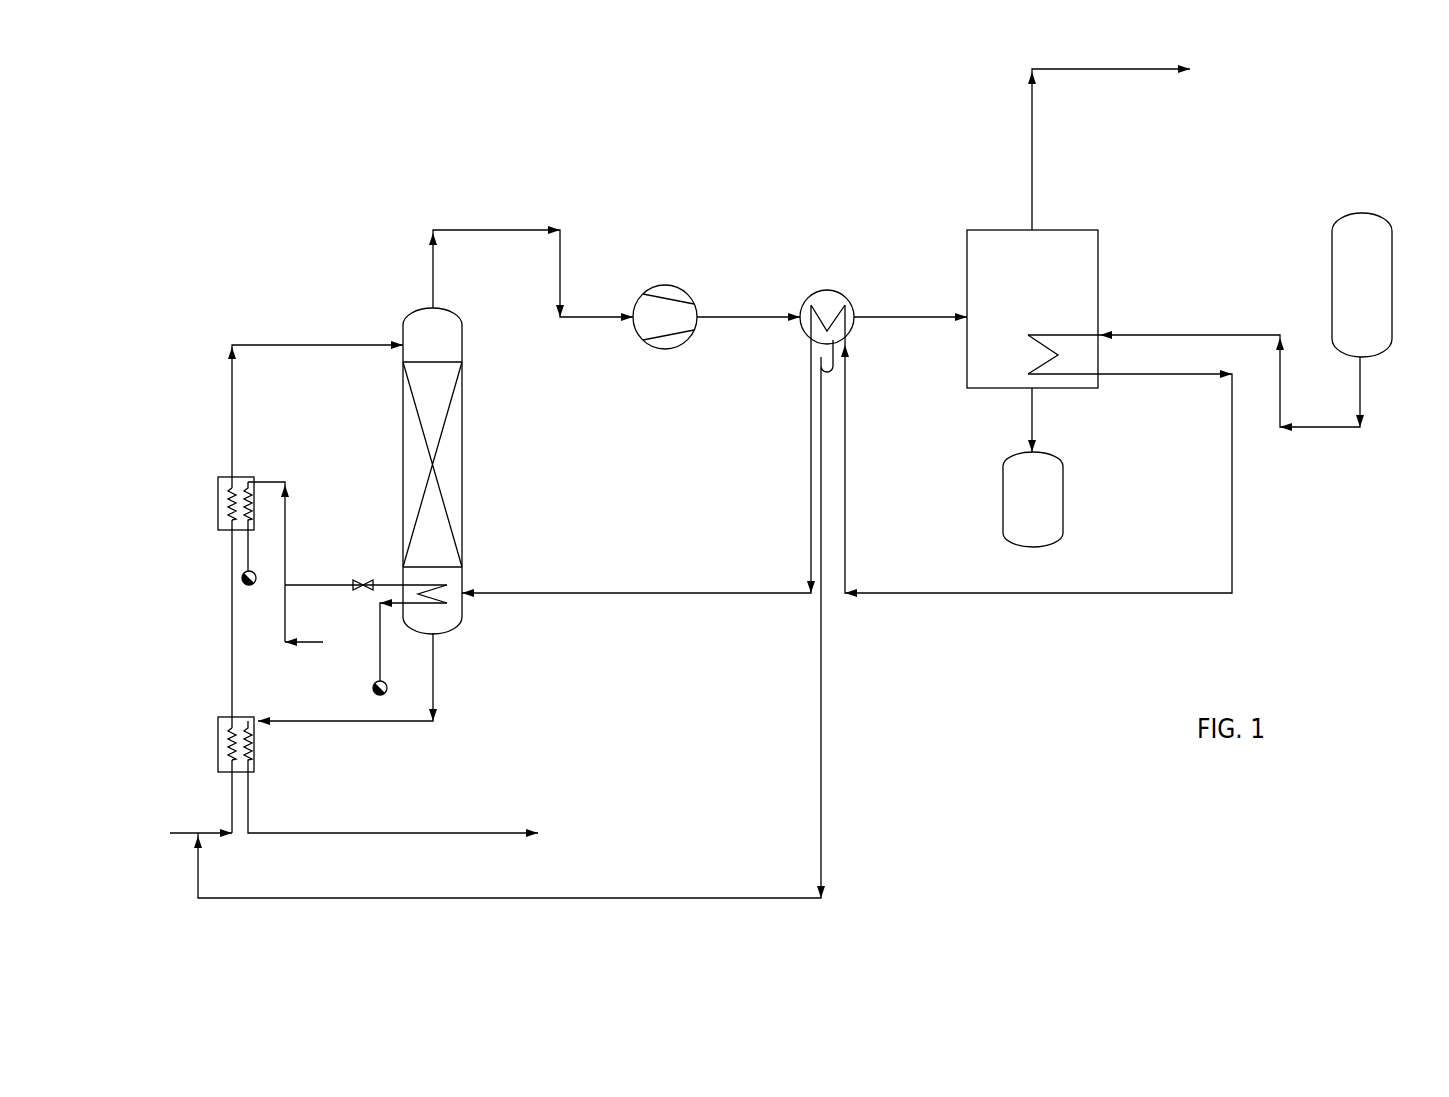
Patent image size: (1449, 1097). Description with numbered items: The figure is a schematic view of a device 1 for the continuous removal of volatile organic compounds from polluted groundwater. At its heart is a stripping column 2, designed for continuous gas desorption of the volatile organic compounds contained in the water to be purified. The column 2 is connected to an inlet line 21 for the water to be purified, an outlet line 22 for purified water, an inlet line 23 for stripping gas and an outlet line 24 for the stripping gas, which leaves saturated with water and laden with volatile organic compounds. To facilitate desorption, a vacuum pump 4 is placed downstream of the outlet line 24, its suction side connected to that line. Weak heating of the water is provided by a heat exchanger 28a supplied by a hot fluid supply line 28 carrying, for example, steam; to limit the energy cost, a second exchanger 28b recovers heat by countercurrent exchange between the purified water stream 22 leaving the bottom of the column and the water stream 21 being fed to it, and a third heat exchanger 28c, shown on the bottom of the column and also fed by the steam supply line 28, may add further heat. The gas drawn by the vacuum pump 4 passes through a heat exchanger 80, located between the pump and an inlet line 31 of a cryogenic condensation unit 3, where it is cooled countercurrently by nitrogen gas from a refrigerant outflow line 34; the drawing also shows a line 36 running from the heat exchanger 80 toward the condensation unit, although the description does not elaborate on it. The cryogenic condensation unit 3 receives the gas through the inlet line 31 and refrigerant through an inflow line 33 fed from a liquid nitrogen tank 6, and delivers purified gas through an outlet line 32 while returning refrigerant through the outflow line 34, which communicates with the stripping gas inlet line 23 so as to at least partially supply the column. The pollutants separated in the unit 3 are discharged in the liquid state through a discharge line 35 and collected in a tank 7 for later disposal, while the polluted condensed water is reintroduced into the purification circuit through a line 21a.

The device for removing volatile organic compounds 1 is at (330, 158).
The stripping column 2 is at (468, 394).
The cryogenic condensation unit 3 is at (1105, 261).
The vacuum pump 4 is at (657, 277).
The liquid nitrogen tank 6 is at (1395, 288).
The tank 7 is at (1000, 498).
The inlet line for water to be purified 21 is at (323, 340).
The line 21a is at (825, 801).
The outlet line for purified water 22 is at (503, 828).
The inlet line for stripping gas 23 is at (508, 588).
The outlet line for stripping gas 24 is at (490, 222).
The hot fluid supply line 28 is at (310, 630).
The heat exchanger 28a is at (245, 470).
The second exchanger 28b is at (250, 712).
The third heat exchanger 28c is at (408, 606).
The inlet line for gas to be purified 31 is at (728, 310).
The outlet line for purified gas 32 is at (1040, 179).
The inflow line for refrigerant 33 is at (1178, 330).
The outflow line for refrigerant 34 is at (1180, 378).
The discharge line 35 is at (1028, 418).
The gas line to condensation unit 36 is at (895, 310).
The heat exchanger 80 is at (824, 288).